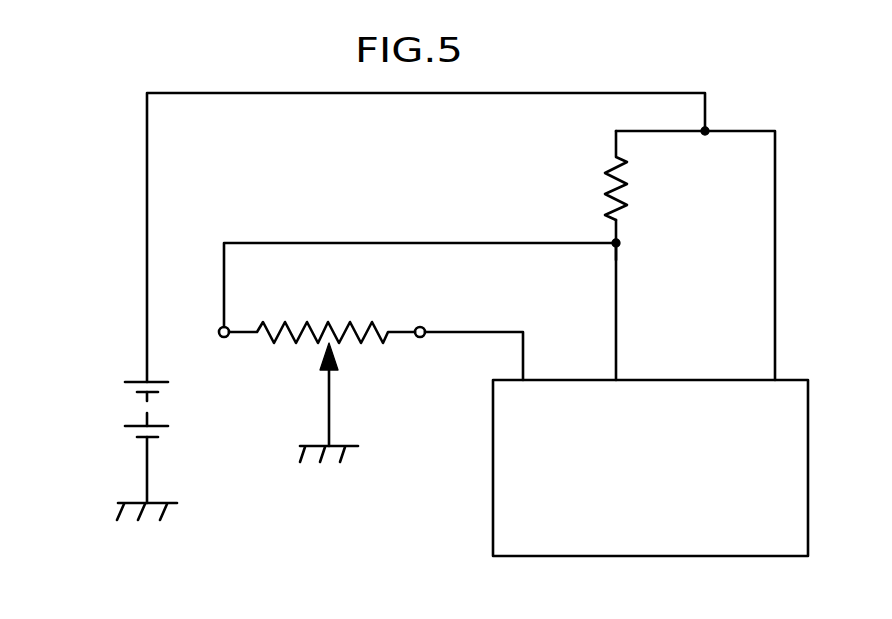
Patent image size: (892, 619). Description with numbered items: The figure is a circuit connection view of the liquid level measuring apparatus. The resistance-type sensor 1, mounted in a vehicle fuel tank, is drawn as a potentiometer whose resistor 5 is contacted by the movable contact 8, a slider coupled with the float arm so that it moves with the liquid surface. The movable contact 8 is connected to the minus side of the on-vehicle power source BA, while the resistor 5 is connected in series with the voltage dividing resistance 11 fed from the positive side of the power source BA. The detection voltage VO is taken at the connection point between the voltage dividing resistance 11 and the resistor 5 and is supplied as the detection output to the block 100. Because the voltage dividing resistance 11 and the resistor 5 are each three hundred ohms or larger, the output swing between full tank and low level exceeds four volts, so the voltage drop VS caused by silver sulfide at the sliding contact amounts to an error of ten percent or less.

The resistance-type sensor 1 is at (322, 372).
The resistor 5 is at (375, 325).
The movable contact 8 is at (330, 405).
The voltage dividing resistance 11 is at (612, 195).
The control unit 100 is at (507, 489).
The on-vehicle power source BA is at (132, 410).
The voltage drop VS is at (330, 345).
The detection voltage VO is at (652, 265).